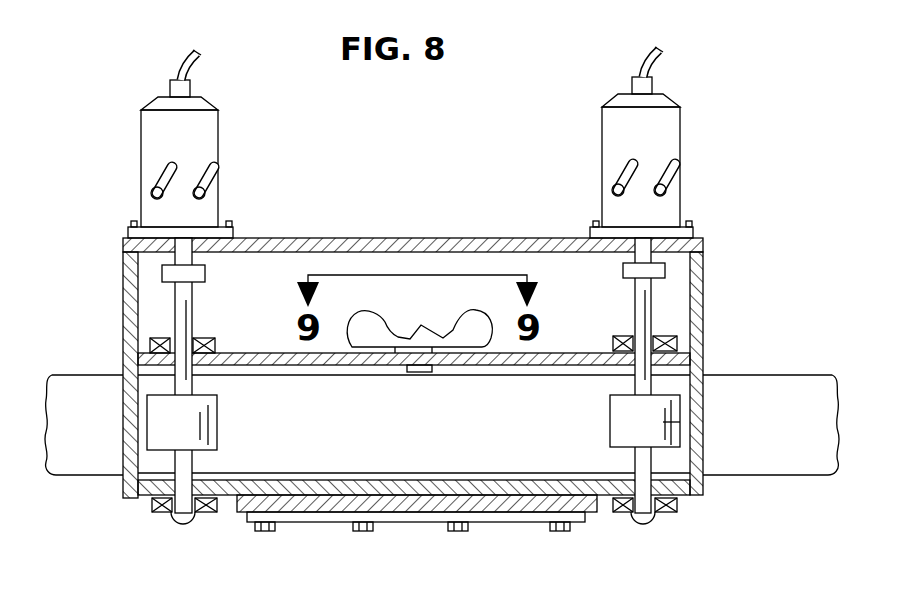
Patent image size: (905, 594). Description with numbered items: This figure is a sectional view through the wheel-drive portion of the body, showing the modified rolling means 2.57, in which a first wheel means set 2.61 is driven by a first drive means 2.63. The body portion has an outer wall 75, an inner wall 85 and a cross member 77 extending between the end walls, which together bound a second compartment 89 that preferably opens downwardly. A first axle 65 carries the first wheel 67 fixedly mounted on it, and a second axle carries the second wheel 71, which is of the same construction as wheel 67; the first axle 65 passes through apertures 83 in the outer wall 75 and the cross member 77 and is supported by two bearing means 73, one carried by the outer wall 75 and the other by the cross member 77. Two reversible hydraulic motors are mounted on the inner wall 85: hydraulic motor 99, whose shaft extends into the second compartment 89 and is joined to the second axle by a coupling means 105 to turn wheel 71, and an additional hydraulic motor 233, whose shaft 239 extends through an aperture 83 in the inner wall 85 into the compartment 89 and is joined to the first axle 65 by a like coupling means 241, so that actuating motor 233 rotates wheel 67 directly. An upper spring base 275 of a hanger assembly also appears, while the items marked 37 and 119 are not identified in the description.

The hydraulic motor 99 is at (200, 145).
The additional hydraulic motor 233 is at (662, 142).
The inner wall 85 is at (373, 246).
The second compartment 89 is at (487, 260).
The apertures 83 is at (660, 234).
The first drive means 2.63 is at (718, 234).
The coupling means 105 is at (200, 275).
The shaft 239 is at (660, 269).
The coupling means 241 is at (665, 262).
The upper spring base 275 is at (372, 325).
The bearing means 73 is at (628, 340).
The first wheel means set 2.61 is at (700, 382).
The cross member 77 is at (575, 362).
The second wheel 71 is at (196, 440).
The first wheel 67 is at (684, 426).
The first axle 65 is at (706, 478).
The modified rolling means 2.57 is at (368, 515).
The outer wall 75 is at (341, 488).
The chamber 37 is at (446, 452).
The base plate 119 is at (324, 505).